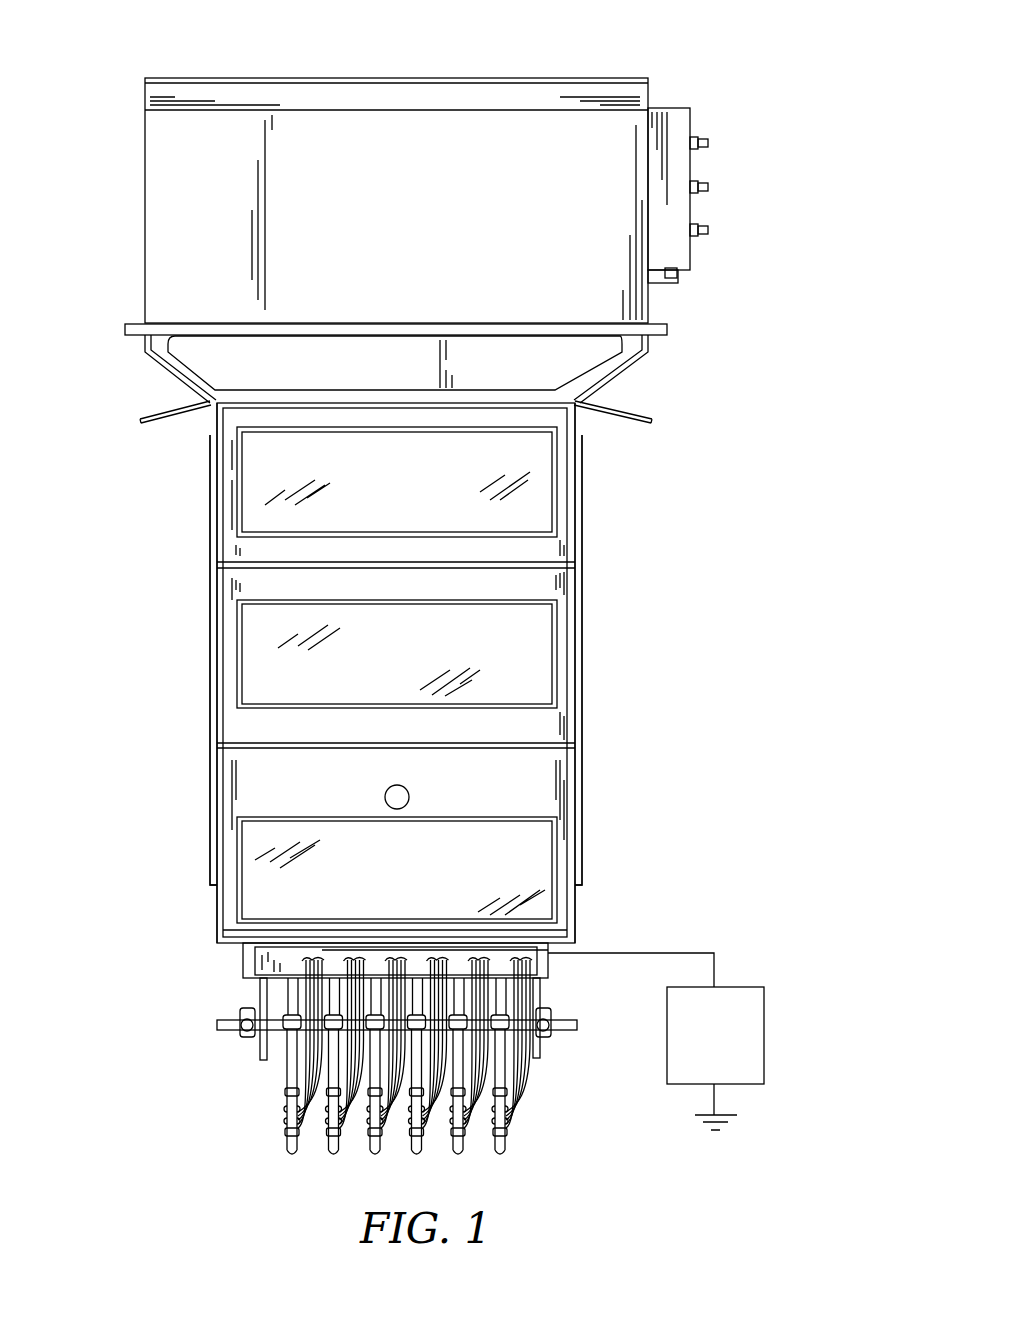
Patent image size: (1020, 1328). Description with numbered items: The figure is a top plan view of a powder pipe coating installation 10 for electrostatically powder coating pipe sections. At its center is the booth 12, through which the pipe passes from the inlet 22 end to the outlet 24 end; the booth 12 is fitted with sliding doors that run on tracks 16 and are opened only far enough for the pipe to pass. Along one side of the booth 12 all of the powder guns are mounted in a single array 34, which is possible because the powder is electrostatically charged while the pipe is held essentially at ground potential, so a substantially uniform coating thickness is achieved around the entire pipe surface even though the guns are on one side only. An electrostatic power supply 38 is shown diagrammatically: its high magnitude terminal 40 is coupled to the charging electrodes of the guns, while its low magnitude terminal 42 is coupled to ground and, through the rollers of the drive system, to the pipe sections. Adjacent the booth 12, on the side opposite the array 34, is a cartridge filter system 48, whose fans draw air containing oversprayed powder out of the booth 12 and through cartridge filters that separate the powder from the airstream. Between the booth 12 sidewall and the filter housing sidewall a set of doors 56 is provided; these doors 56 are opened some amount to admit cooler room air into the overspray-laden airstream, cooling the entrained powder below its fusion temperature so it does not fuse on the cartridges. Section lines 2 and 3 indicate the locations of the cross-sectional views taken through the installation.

The powder pipe coating installation 10 is at (124, 890).
The booth 12 is at (517, 858).
The tracks 16 is at (208, 616).
The inlet end 22 is at (640, 678).
The outlet end 24 is at (138, 701).
The gun array 34 is at (198, 1054).
The electrostatic power supply 38 is at (668, 1057).
The high magnitude terminal 40 is at (722, 982).
The low magnitude terminal 42 is at (706, 1092).
The cartridge filter system 48 is at (650, 14).
The doors 56 is at (160, 416).
The section line 2- 2 is at (760, 1175).
The section line 3- 3 is at (768, 85).